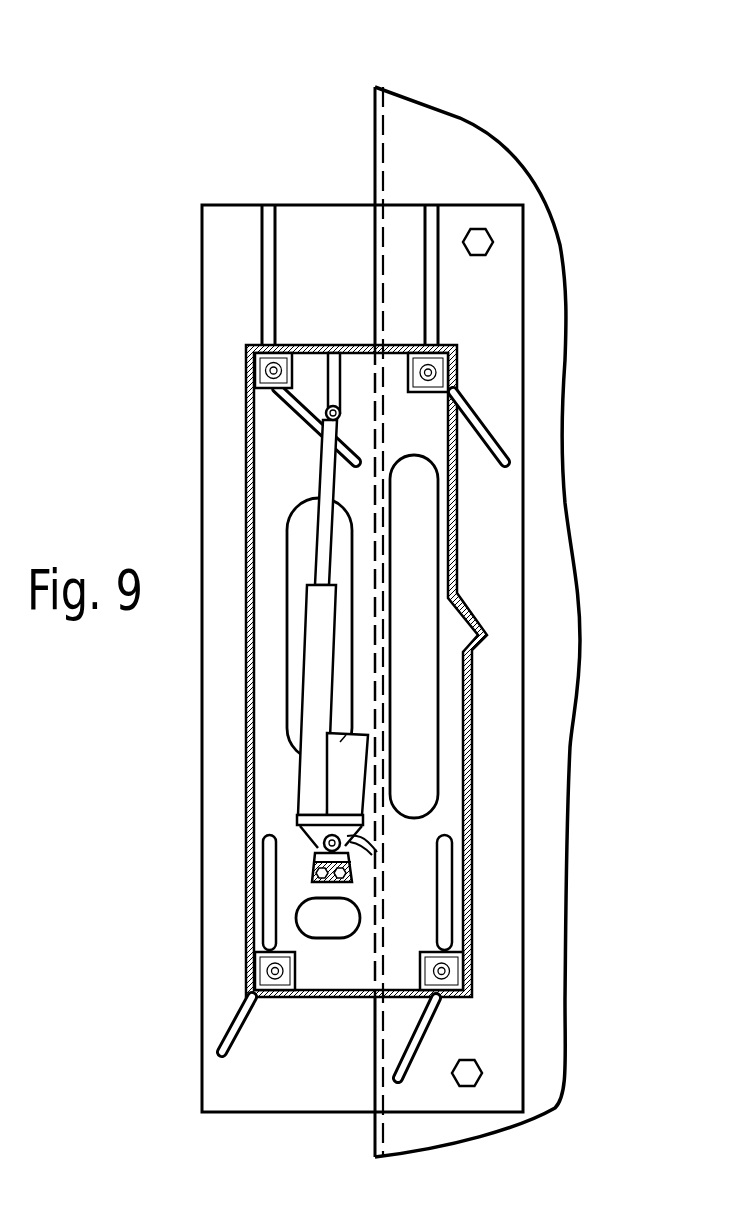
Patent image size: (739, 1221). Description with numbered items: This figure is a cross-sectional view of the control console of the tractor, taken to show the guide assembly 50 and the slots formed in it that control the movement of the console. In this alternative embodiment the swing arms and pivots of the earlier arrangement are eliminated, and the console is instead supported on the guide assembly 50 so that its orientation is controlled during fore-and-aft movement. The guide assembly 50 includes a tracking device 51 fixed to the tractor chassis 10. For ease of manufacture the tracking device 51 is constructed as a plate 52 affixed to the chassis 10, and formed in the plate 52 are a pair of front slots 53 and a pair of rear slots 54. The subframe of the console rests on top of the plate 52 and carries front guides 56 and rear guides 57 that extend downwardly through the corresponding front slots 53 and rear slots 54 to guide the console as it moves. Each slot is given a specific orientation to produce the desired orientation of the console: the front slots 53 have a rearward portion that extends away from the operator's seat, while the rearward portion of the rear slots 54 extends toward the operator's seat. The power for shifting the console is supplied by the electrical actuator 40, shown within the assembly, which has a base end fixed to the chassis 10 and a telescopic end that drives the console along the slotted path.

The tractor chassis 10 is at (438, 138).
The electrical actuator 40 is at (317, 658).
The guide assembly 50 is at (305, 96).
The tracking device 51 is at (268, 164).
The plate 52 is at (500, 313).
The front slots 53 is at (267, 272).
The rear slots 54 is at (228, 1027).
The front guides 56 is at (267, 390).
The rear guides 57 is at (470, 973).